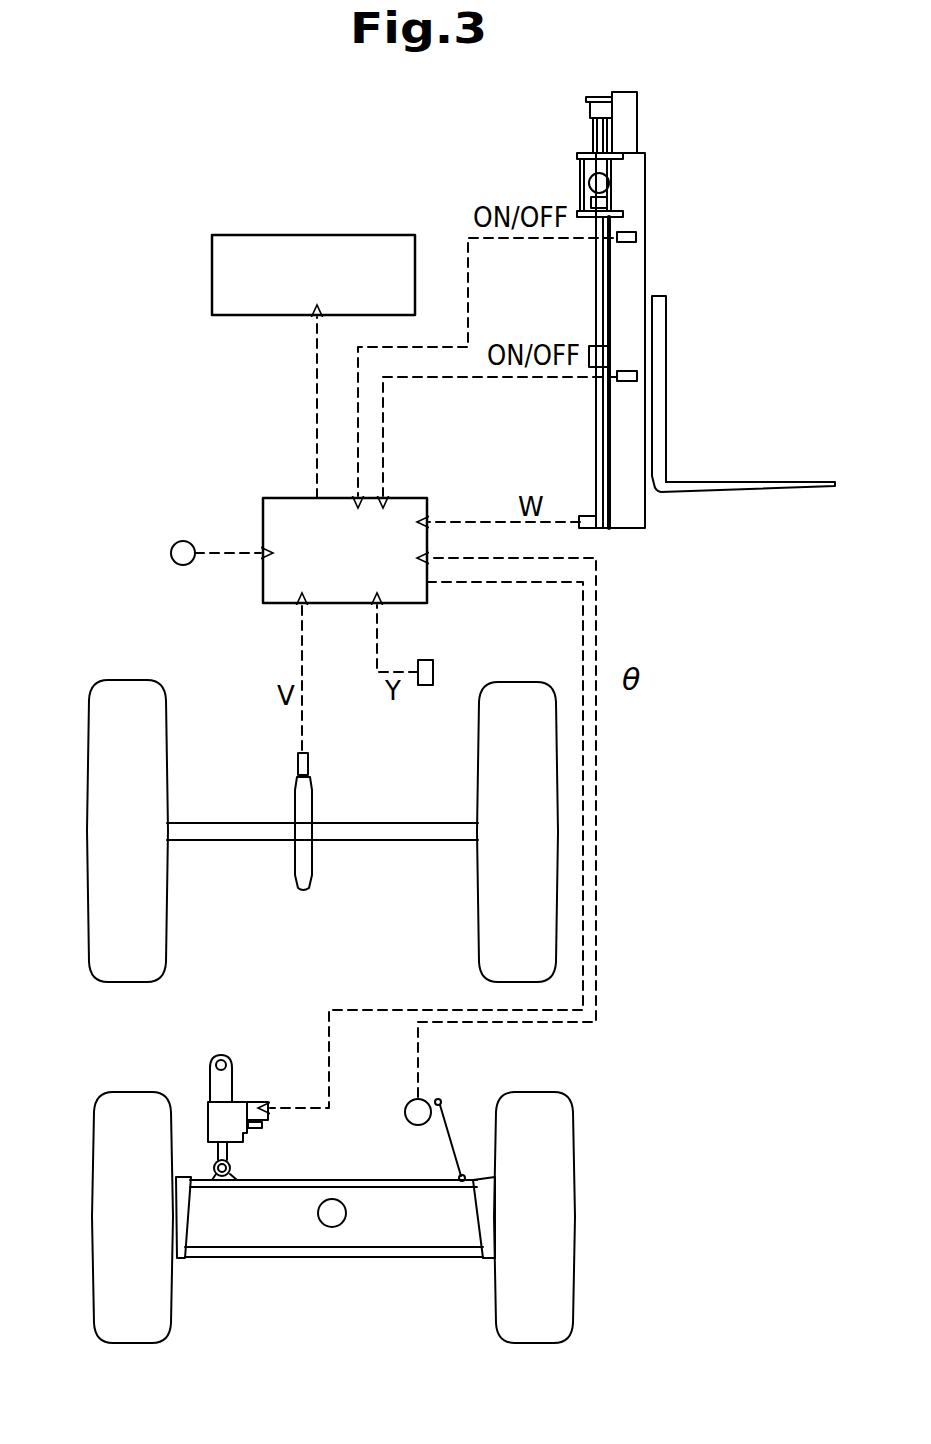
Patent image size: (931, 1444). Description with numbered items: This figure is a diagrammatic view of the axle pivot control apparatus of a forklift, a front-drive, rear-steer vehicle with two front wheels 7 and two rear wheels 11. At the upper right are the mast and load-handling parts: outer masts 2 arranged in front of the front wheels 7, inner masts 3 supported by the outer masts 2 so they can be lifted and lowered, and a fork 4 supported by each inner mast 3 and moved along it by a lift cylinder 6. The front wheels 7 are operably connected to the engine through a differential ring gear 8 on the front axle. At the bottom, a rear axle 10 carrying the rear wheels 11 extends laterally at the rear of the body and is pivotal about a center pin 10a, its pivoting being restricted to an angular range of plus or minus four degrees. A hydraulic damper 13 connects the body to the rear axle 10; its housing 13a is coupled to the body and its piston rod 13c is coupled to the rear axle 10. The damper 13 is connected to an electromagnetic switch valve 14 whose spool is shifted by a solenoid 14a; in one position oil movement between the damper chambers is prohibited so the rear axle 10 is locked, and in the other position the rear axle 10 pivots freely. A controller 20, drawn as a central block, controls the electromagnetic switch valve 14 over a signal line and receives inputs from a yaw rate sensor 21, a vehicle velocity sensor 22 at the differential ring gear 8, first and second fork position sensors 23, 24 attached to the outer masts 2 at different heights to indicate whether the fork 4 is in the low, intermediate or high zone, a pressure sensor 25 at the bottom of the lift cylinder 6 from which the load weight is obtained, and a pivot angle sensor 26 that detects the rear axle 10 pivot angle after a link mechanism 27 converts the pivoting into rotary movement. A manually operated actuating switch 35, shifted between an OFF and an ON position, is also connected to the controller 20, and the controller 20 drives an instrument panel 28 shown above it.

The outer mast 2 is at (645, 262).
The inner mast 3 is at (637, 122).
The fork 4 is at (754, 481).
The lift cylinder 6 is at (596, 310).
The front wheel 7 is at (125, 680).
The differential ring gear 8 is at (313, 797).
The rear axle 10 is at (397, 1258).
The center pin 10a is at (346, 1213).
The rear wheel 11 is at (93, 1219).
The hydraulic damper 13 is at (206, 1117).
The housing 13a is at (218, 1128).
The piston rod 13c is at (228, 1153).
The electromagnetic switch valve 14 is at (258, 1101).
The solenoid 14a is at (263, 1125).
The controller 20 is at (293, 497).
The yaw rate sensor 21 is at (435, 666).
The vehicle velocity sensor 22 is at (309, 765).
The first fork position sensor 23 is at (625, 371).
The second fork position sensor 24 is at (623, 232).
The pressure sensor 25 is at (583, 515).
The pivot angle sensor 26 is at (405, 1112).
The link mechanism 27 is at (449, 1127).
The instrument panel 28 is at (358, 233).
The actuating switch 35 is at (171, 553).